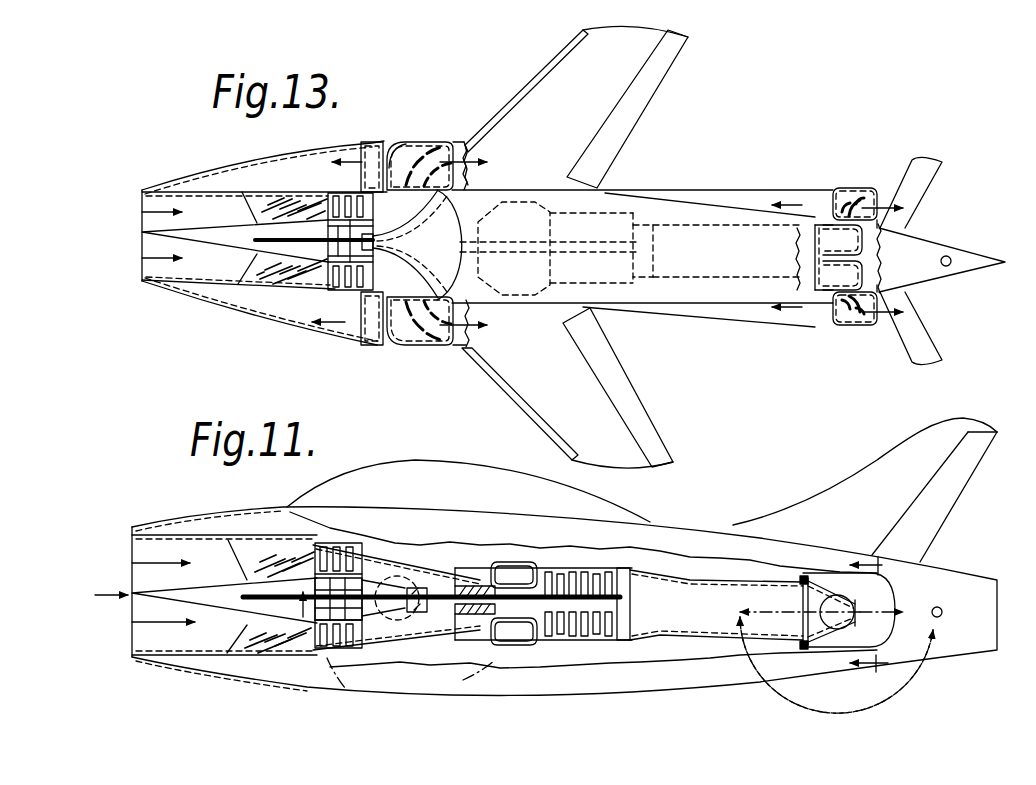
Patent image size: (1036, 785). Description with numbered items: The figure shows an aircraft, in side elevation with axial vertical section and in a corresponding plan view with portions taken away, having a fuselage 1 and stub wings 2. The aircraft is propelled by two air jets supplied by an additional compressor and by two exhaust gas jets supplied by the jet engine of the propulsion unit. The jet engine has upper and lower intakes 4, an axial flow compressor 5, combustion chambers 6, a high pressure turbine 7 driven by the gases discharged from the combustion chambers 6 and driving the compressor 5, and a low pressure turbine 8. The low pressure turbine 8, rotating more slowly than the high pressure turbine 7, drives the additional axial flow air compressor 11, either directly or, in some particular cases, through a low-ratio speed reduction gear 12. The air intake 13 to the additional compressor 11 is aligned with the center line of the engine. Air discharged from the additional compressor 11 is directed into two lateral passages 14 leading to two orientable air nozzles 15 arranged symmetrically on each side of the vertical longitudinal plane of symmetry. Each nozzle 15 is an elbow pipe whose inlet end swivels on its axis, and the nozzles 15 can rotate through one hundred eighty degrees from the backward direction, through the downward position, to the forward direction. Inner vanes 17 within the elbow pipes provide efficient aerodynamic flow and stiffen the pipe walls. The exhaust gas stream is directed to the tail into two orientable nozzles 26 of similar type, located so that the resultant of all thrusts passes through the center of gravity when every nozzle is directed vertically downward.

In FIG. 13, the fuselage 1 is at (613, 202).
In FIG. 11, the fuselage 1 is at (652, 538).
In FIG. 13, the stub wings 2 is at (530, 107).
In FIG. 11, the upper and lower intakes 4 is at (423, 582).
In FIG. 11, the axial flow compressor 5 is at (477, 590).
In FIG. 11, the combustion chambers 6 is at (507, 580).
In FIG. 11, the high pressure turbine 7 is at (543, 577).
In FIG. 11, the low pressure turbine 8 is at (577, 568).
In FIG. 13, the additional axial flow air compressor 11 is at (343, 188).
In FIG. 11, the additional axial flow air compressor 11 is at (338, 548).
In FIG. 11, the low-ratio speed reduction gear 12 is at (413, 590).
In FIG. 13, the air intake 13 is at (270, 281).
In FIG. 11, the air intake 13 is at (263, 552).
In FIG. 13, the lateral passages 14 is at (387, 190).
In FIG. 13, the orientable air nozzles 15 is at (428, 152).
In FIG. 13, the inner vanes 17 is at (403, 150).
In FIG. 13, the orientable nozzles 26 is at (852, 200).
In FIG. 11, the orientable nozzles 26 is at (857, 600).